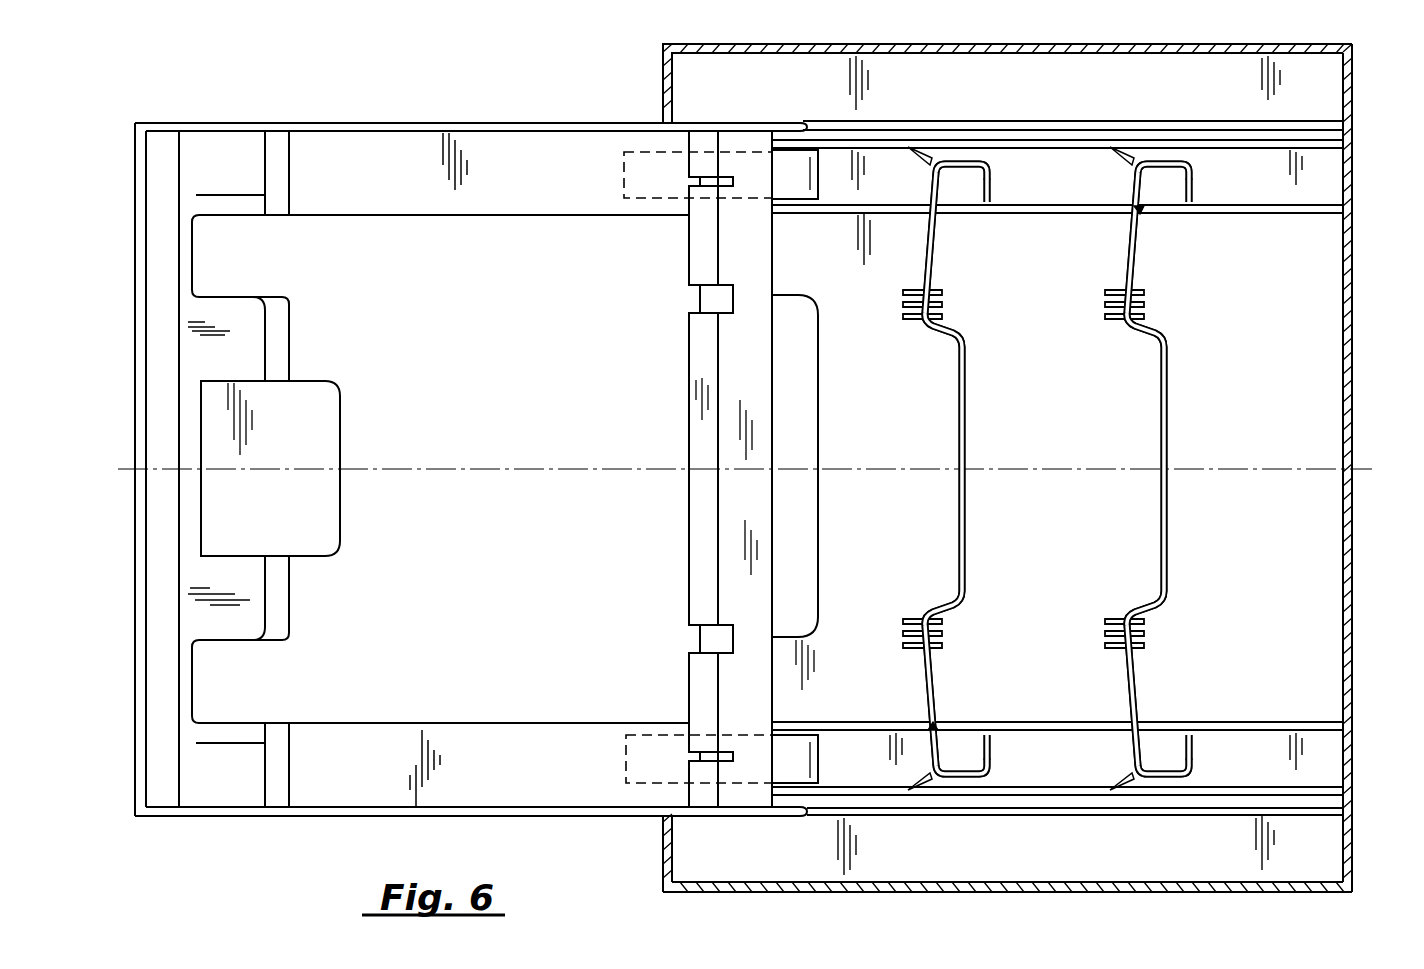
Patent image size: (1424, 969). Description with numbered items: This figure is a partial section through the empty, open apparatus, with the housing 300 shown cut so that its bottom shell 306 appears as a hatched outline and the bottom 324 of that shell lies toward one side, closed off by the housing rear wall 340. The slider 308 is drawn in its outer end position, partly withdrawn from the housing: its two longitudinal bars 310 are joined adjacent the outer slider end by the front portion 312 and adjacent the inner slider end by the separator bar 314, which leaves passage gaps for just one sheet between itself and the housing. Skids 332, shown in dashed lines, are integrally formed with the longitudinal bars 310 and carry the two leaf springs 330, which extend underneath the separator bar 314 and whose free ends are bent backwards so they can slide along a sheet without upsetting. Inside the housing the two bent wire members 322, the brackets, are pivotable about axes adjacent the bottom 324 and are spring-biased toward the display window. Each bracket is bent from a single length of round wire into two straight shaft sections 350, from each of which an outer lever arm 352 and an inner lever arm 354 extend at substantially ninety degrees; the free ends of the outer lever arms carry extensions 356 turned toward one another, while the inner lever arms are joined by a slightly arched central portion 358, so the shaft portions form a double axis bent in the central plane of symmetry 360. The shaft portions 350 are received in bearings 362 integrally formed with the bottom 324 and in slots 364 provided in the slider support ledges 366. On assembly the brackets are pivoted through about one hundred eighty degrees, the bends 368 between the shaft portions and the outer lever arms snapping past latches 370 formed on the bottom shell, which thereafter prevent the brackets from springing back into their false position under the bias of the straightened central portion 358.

The housing 300 is at (663, 832).
The bottom shell 306 is at (776, 885).
The slider 308 is at (350, 818).
The longitudinal bars 310 is at (470, 123).
The front portion 312 is at (140, 500).
The separator bar 314 is at (689, 500).
The bent wire member 322 is at (970, 510).
The bottom 324 is at (1318, 613).
The leaf springs 330 is at (800, 190).
The skids 332 is at (624, 200).
The housing rear wall 340 is at (1350, 558).
The shaft sections 350 is at (931, 257).
The outer lever arm 352 is at (978, 162).
The inner lever arm 354 is at (938, 342).
The extensions 356 is at (991, 192).
The central portion 358 is at (966, 425).
The central plane of symmetry 360 is at (574, 466).
The bearings 362 is at (946, 317).
The slots 364 is at (1141, 214).
The slider support ledges 366 is at (1070, 214).
The bends 368 is at (1140, 162).
The latches 370 is at (918, 150).